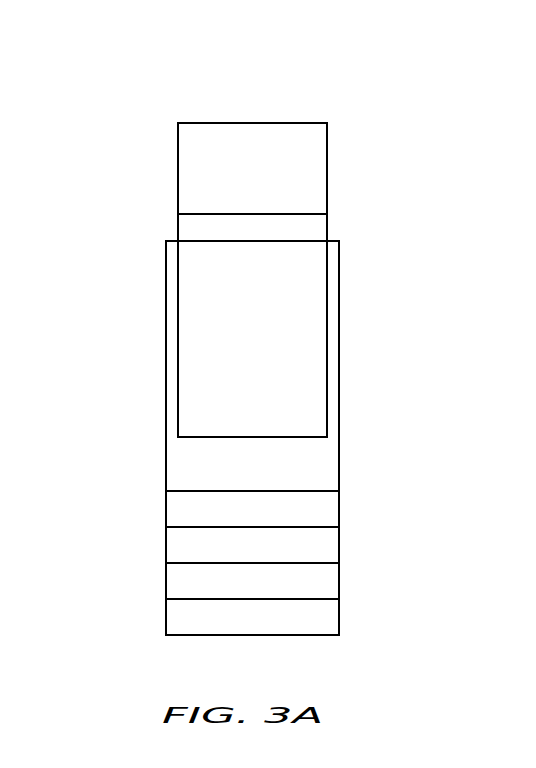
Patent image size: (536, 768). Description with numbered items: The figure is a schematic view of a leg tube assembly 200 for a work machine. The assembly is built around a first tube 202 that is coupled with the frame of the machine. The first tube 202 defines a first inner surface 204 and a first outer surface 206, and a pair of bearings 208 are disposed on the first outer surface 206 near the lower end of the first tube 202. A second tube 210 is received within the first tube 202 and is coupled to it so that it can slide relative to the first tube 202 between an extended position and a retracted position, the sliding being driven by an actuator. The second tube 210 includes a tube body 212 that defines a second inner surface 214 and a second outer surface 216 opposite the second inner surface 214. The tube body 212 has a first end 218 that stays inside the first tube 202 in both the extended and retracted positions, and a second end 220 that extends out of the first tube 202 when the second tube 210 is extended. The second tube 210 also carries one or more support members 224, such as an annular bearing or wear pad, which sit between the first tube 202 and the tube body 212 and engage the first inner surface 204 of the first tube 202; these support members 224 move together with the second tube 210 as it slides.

The leg tube assembly 200 is at (407, 74).
The second end 220 is at (172, 116).
The second tube 210 is at (337, 146).
The support member 224 is at (318, 181).
The second outer surface 216 is at (327, 227).
The second inner surface 214 is at (178, 228).
The tube body 212 is at (170, 219).
The first tube 202 is at (145, 381).
The first outer surface 206 is at (166, 415).
The first inner surface 204 is at (332, 463).
The first end 218 is at (195, 450).
The bearings 208 is at (332, 520).